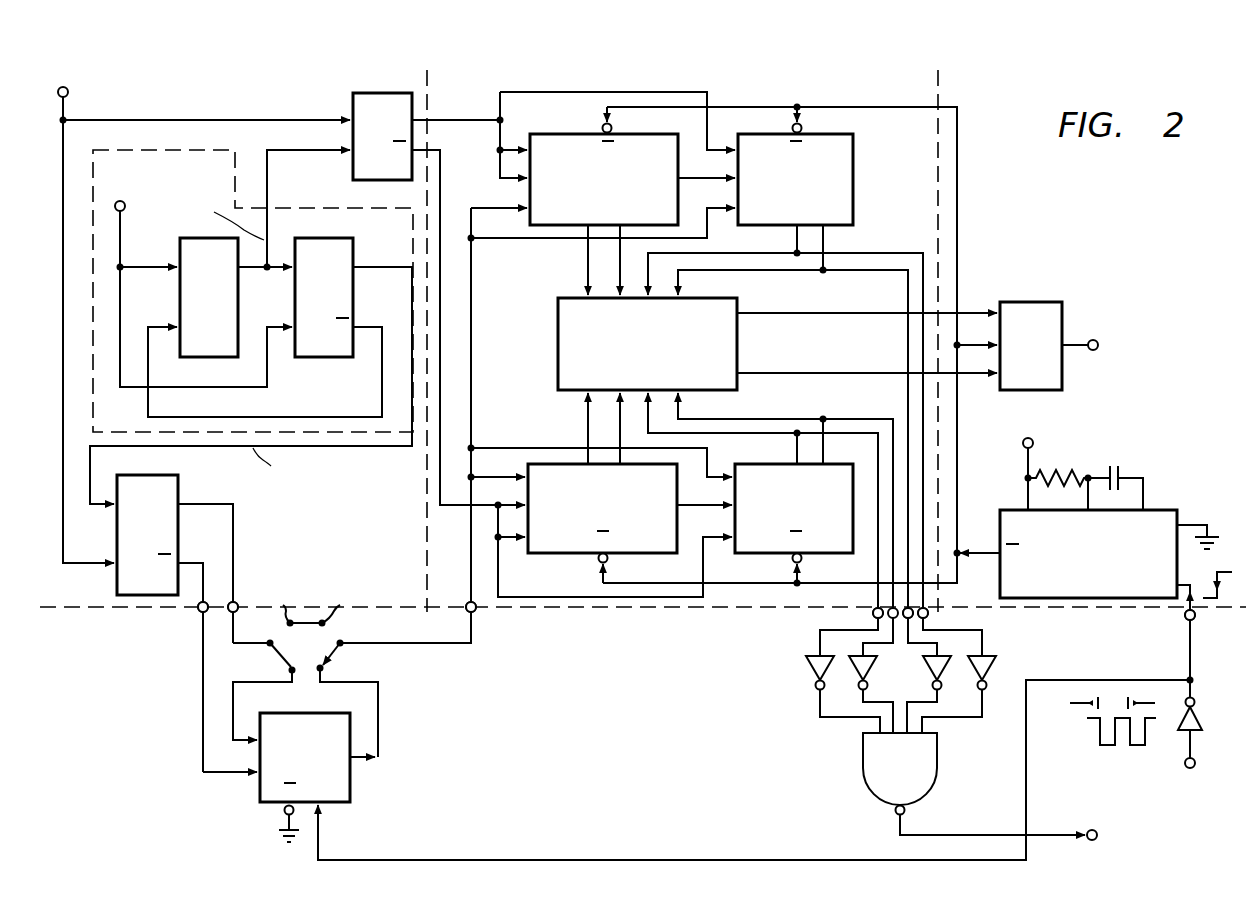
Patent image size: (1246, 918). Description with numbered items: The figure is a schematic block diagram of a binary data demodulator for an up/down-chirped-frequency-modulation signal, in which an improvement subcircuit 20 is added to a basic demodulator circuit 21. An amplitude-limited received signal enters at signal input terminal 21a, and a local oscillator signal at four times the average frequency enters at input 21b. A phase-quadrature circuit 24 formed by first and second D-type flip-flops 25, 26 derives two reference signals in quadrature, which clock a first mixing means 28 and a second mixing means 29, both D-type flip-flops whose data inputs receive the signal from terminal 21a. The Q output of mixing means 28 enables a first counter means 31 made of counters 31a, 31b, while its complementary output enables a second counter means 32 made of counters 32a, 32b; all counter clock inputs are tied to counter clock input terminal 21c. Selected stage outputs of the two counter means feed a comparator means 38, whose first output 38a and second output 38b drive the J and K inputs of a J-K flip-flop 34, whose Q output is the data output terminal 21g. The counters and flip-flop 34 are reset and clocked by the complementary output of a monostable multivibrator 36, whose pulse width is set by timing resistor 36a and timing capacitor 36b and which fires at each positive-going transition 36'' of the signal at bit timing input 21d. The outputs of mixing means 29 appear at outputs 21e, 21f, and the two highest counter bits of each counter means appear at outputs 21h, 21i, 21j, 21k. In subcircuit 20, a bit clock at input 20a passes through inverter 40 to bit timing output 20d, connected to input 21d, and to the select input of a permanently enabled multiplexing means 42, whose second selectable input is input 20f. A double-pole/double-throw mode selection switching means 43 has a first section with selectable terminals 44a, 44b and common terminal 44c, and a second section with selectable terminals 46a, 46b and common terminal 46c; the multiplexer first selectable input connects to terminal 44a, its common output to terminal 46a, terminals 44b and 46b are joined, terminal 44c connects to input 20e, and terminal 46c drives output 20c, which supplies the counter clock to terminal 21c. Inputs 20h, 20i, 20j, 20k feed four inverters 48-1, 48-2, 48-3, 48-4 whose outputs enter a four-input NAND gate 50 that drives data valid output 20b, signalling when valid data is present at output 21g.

The improvement subcircuit 20 is at (123, 807).
The first subcircuit input 20a is at (1184, 766).
The data valid output 20b is at (1088, 830).
The output terminal 20c is at (476, 611).
The bit timing output 20d is at (1189, 622).
The input terminal 20e is at (229, 614).
The input 20f is at (200, 611).
The improvement section input 20h is at (872, 614).
The improvement section input 20i is at (888, 618).
The improvement section input 20j is at (907, 620).
The improvement section input 20k is at (925, 618).
The basic binary data demodulator circuit 21 is at (369, 539).
The demodulator signal input terminal 21a is at (68, 96).
The local oscillator input terminal 21b is at (124, 210).
The counter clock input terminal 21c is at (467, 604).
The bit timing input 21d is at (1185, 613).
The output 21e is at (236, 602).
The output 21f is at (205, 602).
The demodulator data output terminal 21g is at (1096, 339).
The counter stage output terminal 21h is at (874, 608).
The counter stage output terminal 21i is at (869, 571).
The counter stage output terminal 21j is at (911, 608).
The counter stage output terminal 21k is at (927, 616).
The phase-quadrature circuit 24 is at (408, 236).
The first D-type flip-flop 25 is at (240, 299).
The second D-type flip-flop 26 is at (355, 299).
The first mixing means 28 is at (352, 102).
The second mixing means 29 is at (178, 484).
The first counter means 31 is at (865, 180).
The first counter 31a is at (566, 134).
The second counter 31b is at (855, 166).
The second counter means 32 is at (551, 438).
The first counter 32a is at (572, 555).
The second counter 32b is at (786, 555).
The J-K flip-flop logic element 34 is at (1016, 302).
The monostable multivibrator means 36 is at (1090, 505).
The timing resistor 36a is at (1058, 474).
The timing capacitor 36b is at (1128, 470).
The positive-going transition 36'' is at (1220, 540).
The N-bit comparator means 38 is at (558, 320).
The first output 38a is at (745, 309).
The second output 38b is at (745, 372).
The inverting means 40 is at (1197, 714).
The multiplexing means 42 is at (350, 786).
The mode selection switching means 43 is at (364, 600).
The first selectable terminal 44a is at (292, 672).
The second selectable terminal 44b is at (289, 595).
The first section common terminal 44c is at (266, 656).
The first selectable terminal 46a is at (324, 668).
The second selectable terminal 46b is at (347, 595).
The second-section common terminal 46c is at (354, 640).
The inverter 48-1 is at (806, 666).
The inverter 48-2 is at (852, 678).
The inverter 48-3 is at (942, 674).
The inverter 48-4 is at (993, 666).
The multiple-input NAND gate 50 is at (864, 786).